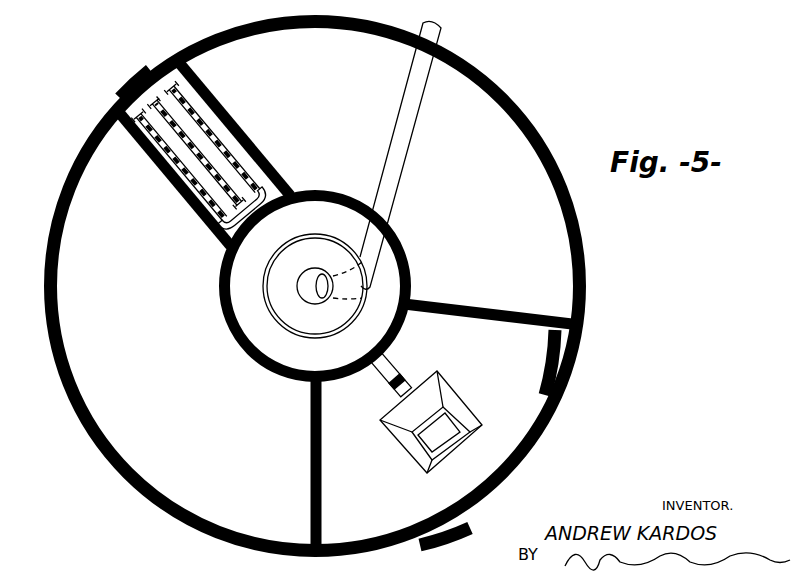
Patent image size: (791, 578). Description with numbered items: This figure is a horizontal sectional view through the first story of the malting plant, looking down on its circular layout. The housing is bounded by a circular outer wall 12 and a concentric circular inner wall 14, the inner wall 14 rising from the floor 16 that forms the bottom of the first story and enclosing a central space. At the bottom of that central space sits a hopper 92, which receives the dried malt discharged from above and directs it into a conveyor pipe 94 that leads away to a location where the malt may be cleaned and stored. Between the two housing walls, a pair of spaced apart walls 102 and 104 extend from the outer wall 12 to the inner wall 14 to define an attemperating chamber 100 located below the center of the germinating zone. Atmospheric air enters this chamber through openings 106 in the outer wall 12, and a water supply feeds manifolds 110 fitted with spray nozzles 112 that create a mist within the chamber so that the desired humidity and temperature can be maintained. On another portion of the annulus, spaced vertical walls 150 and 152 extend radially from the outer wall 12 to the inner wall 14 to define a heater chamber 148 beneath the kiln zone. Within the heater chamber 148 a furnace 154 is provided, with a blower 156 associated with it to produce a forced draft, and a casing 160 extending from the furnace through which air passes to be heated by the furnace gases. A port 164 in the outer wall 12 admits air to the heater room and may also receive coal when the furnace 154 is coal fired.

The outer wall 12 is at (68, 182).
The circular inner wall 14 is at (222, 272).
The floor 16 is at (162, 407).
The hopper 92 is at (268, 321).
The conveyor pipe 94 is at (410, 147).
The attemperating chamber 100 is at (192, 190).
The wall 102 is at (222, 113).
The wall 104 is at (153, 162).
The openings 106 is at (132, 88).
The manifolds 110 is at (228, 151).
The spray nozzles 112 is at (183, 100).
The heater chamber 148 is at (560, 358).
The vertical wall 150 is at (311, 468).
The vertical wall 152 is at (488, 306).
The furnace 154 is at (450, 388).
The blower 156 is at (378, 390).
The casing 160 is at (415, 462).
The port 164 is at (494, 507).